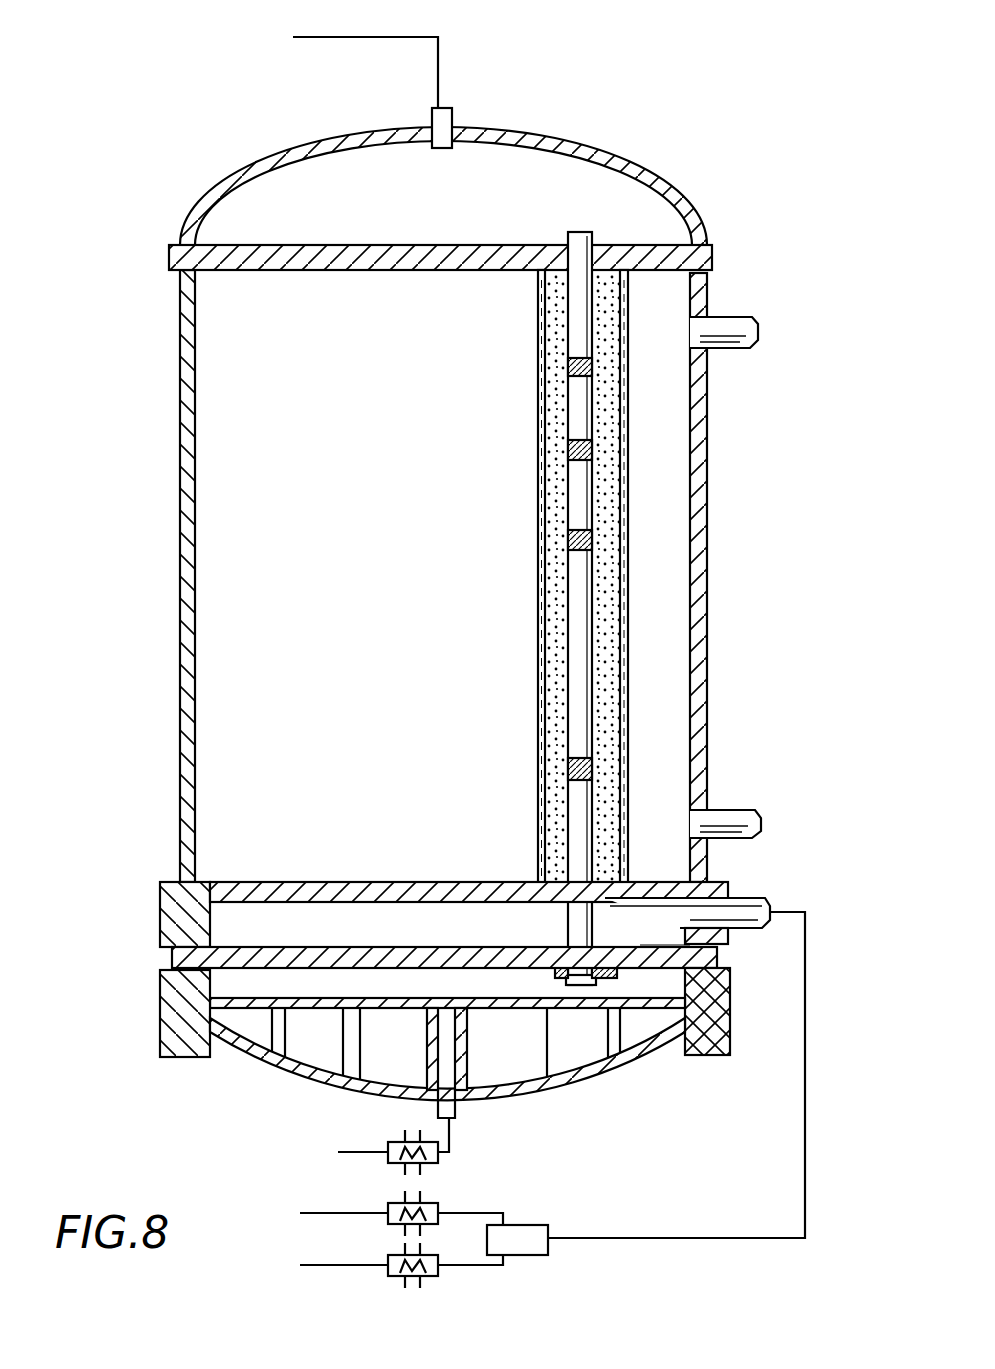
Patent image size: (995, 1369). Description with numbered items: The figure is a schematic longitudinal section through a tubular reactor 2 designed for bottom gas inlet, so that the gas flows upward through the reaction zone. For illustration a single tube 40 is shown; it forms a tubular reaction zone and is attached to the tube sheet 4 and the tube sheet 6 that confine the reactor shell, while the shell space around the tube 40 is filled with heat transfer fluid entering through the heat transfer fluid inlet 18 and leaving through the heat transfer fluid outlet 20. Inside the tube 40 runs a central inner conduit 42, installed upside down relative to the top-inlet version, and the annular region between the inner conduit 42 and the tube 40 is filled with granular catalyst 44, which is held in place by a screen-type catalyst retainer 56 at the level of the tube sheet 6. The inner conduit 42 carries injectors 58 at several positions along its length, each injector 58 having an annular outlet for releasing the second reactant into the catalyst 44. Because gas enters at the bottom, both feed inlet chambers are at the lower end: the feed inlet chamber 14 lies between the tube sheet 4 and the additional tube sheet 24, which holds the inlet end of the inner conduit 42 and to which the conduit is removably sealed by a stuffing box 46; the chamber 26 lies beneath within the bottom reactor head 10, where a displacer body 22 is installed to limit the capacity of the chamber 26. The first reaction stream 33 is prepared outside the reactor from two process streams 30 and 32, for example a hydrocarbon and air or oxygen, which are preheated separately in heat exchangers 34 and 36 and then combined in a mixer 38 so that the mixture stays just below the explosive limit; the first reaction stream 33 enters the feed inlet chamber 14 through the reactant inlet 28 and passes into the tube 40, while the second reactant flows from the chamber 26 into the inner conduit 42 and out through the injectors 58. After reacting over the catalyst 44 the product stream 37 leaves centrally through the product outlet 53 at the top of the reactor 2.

The reactor 2 is at (724, 659).
The tube sheet 4 is at (316, 860).
The tube sheet 6 is at (352, 272).
The reactor head 10 is at (256, 1062).
The feed inlet chamber 14 is at (730, 1003).
The heat transfer fluid inlet 18 is at (730, 318).
The heat transfer fluid outlet 20 is at (713, 823).
The displacer body 22 is at (343, 1090).
The tube sheet 24 is at (395, 950).
The chamber 26 is at (513, 985).
The reactant inlet 28 is at (770, 912).
The process stream 30 is at (300, 1218).
The process stream 32 is at (300, 1268).
The first reaction stream 33 is at (704, 1075).
The heat exchanger 34 is at (442, 1210).
The heat exchanger 36 is at (440, 1275).
The product stream 37 is at (312, 37).
The mixer 38 is at (530, 1235).
The tube 40 is at (543, 646).
The inner conduit 42 is at (580, 594).
The catalyst 44 is at (605, 495).
The stuffing box 46 is at (640, 945).
The product outlet 53 is at (430, 112).
The catalyst retainer 56 is at (598, 264).
The injector 58 is at (568, 366).